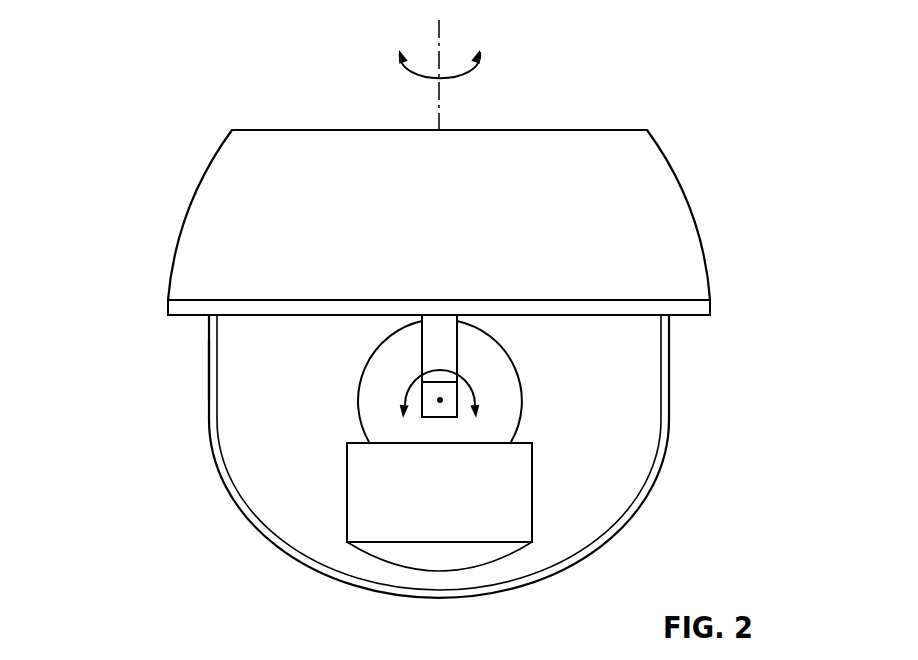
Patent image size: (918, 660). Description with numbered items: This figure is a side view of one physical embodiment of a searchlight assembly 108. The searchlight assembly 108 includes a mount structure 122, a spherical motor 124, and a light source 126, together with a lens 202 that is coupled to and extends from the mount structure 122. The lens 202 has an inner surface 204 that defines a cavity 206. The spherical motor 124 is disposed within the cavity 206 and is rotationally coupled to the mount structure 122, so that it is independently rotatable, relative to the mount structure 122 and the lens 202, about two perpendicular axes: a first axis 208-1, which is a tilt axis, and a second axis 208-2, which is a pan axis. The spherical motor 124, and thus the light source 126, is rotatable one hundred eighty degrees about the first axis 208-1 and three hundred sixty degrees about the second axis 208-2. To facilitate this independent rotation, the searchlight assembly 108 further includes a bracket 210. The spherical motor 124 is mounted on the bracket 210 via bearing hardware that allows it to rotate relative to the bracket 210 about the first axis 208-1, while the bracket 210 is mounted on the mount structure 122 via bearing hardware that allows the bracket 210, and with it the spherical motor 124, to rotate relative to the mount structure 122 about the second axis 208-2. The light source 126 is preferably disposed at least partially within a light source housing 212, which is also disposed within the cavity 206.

The searchlight assembly 108 is at (178, 123).
The mount structure 122 is at (694, 176).
The lens 202 is at (208, 413).
The inner surface 204 is at (216, 366).
The cavity 206 is at (266, 440).
The first axis 208-1 is at (440, 400).
The second axis 208-2 is at (442, 43).
The bracket 210 is at (437, 335).
The spherical motor 124 is at (532, 372).
The light source housing 212 is at (362, 513).
The light source 126 is at (542, 488).